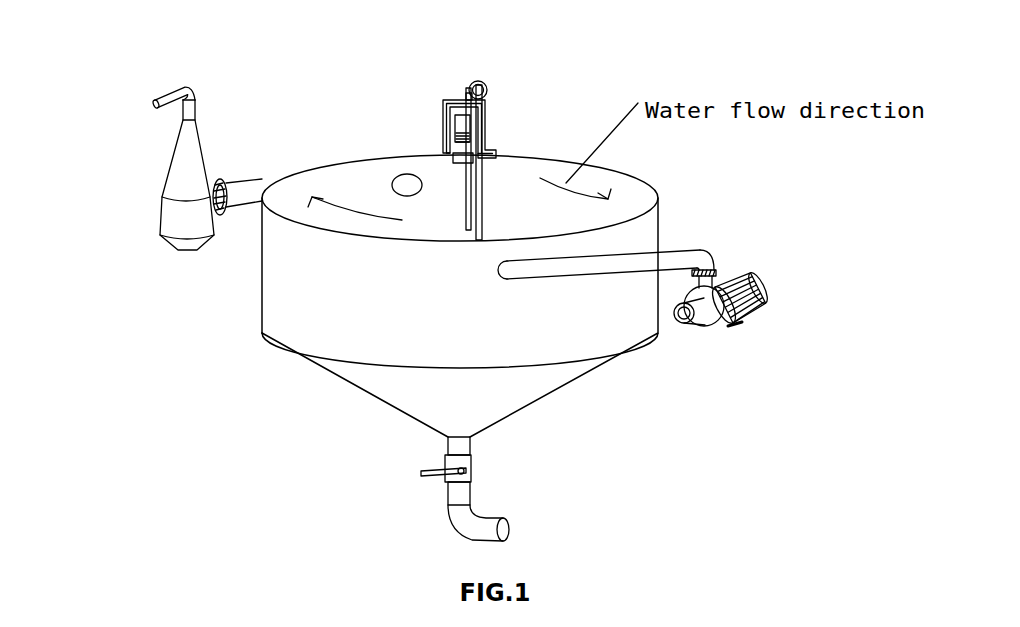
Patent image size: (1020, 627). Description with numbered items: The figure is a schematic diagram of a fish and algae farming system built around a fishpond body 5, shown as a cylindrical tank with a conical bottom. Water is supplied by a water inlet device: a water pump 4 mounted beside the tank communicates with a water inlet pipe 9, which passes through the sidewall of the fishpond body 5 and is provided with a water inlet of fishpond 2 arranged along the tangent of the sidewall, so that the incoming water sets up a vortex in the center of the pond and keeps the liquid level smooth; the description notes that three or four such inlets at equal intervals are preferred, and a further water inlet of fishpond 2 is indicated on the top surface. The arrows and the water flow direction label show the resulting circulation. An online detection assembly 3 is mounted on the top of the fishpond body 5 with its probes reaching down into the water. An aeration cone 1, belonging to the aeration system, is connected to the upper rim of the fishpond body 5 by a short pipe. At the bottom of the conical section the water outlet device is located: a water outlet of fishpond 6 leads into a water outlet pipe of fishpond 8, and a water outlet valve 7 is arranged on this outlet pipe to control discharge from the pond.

The aeration cone 1 is at (187, 163).
The water inlet of fishpond 2 is at (407, 185).
The online detection assembly 3 is at (483, 97).
The water pump 4 is at (764, 287).
The fishpond body 5 is at (340, 319).
The water outlet of fishpond 6 is at (456, 446).
The water outlet valve 7 is at (465, 470).
The water outlet pipe of fishpond 8 is at (480, 527).
The water inlet pipe 9 is at (610, 270).